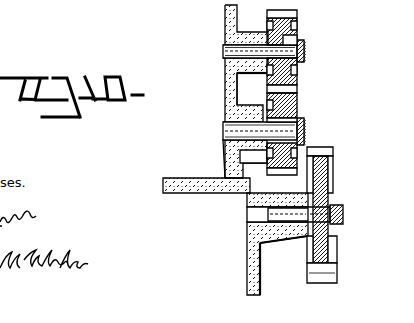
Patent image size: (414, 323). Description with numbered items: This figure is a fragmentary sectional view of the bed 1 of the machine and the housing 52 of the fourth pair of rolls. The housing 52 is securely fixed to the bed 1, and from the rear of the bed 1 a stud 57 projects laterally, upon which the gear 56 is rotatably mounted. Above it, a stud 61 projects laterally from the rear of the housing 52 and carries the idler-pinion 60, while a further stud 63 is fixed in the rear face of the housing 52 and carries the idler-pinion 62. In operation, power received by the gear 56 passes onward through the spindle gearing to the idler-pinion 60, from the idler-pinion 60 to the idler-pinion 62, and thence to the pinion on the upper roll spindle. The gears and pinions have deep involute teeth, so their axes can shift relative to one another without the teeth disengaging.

The bed 1 is at (247, 268).
The housing 52 is at (230, 95).
The gear 56 is at (338, 278).
The stud 57 is at (345, 213).
The idler-pinion 60 is at (297, 108).
The stud 61 is at (227, 133).
The idler-pinion 62 is at (295, 14).
The stud 63 is at (227, 51).